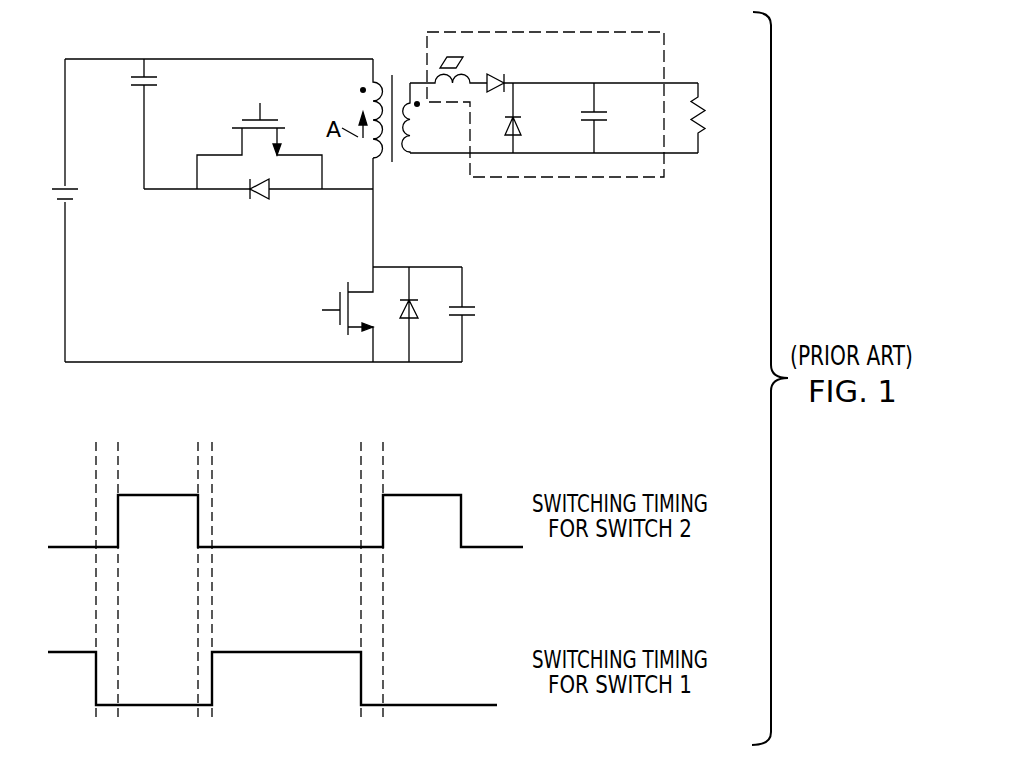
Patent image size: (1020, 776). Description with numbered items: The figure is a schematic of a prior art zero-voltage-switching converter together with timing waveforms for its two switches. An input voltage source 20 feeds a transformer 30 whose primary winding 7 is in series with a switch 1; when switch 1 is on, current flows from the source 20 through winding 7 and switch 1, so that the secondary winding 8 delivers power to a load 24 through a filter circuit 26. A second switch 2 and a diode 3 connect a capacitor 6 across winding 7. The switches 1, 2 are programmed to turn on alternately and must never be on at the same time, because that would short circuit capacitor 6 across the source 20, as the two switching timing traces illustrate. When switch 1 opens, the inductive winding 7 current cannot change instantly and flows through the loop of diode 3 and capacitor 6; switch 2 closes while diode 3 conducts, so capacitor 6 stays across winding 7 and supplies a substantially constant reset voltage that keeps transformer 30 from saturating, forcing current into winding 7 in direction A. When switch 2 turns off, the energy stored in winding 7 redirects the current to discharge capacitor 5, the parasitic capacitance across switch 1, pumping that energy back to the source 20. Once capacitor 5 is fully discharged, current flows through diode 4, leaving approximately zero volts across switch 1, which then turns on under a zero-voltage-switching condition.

The switch 1 is at (333, 308).
The switch 2 is at (262, 107).
The diode 3 is at (260, 197).
The diode 4 is at (415, 310).
The capacitor 5 is at (477, 308).
The capacitor 6 is at (130, 88).
The winding 7 is at (377, 82).
The winding 8 is at (410, 127).
The input voltage source 20 is at (57, 187).
The load 24 is at (707, 110).
The filter circuit 26 is at (605, 175).
The transformer 30 is at (402, 92).